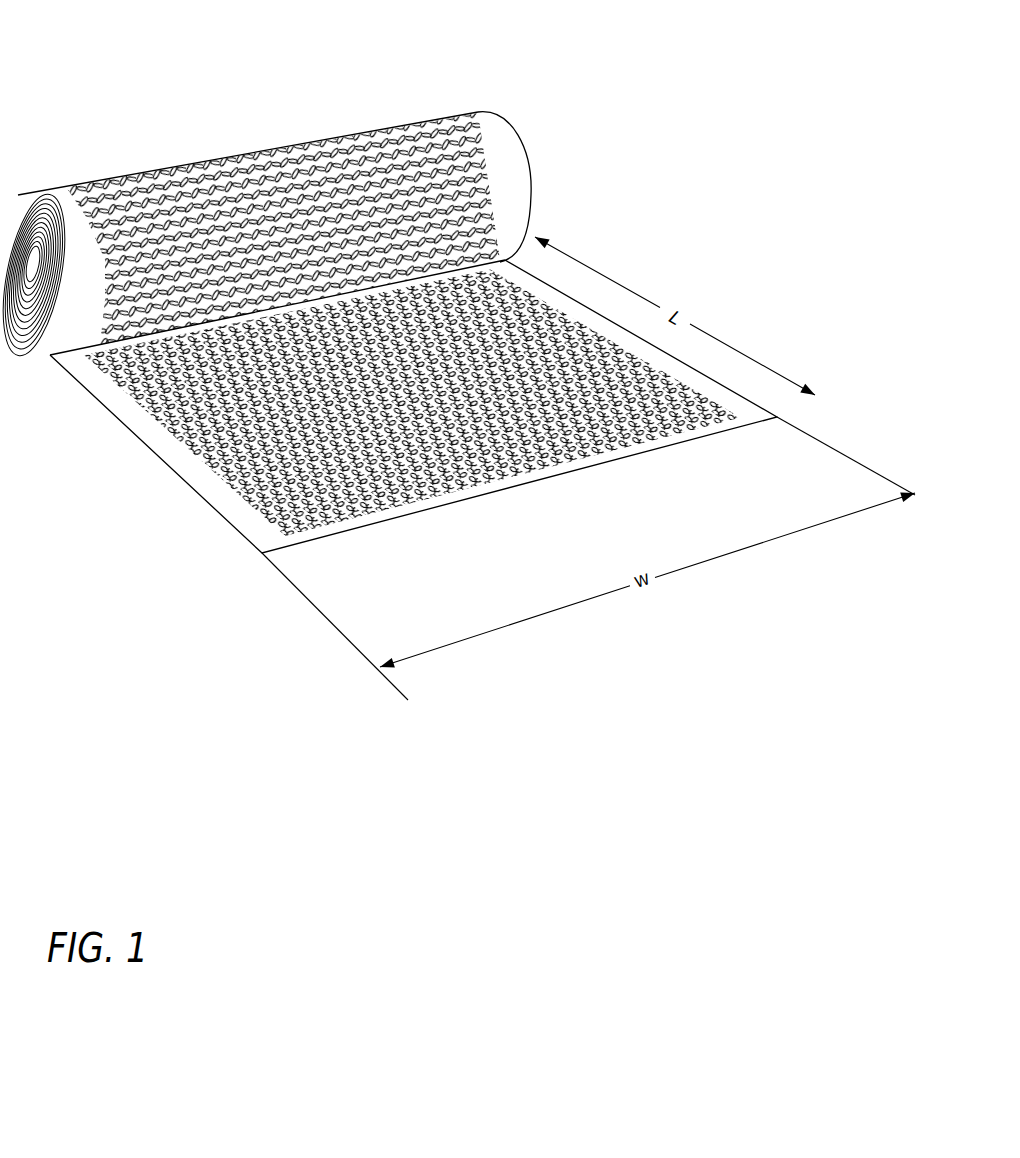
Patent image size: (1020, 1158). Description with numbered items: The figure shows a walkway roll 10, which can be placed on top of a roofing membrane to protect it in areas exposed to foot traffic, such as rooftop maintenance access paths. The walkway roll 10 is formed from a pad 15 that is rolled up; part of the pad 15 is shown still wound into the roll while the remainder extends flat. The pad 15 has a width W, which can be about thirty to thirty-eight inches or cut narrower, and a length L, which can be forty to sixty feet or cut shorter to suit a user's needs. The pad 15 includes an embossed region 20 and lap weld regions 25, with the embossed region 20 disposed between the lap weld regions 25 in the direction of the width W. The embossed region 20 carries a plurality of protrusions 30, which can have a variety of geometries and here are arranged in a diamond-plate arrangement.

The walkway roll 10 is at (120, 68).
The pad 15 is at (497, 385).
The embossed region 20 is at (503, 498).
The lap weld region 25 is at (287, 556).
The protrusions 30 is at (187, 420).